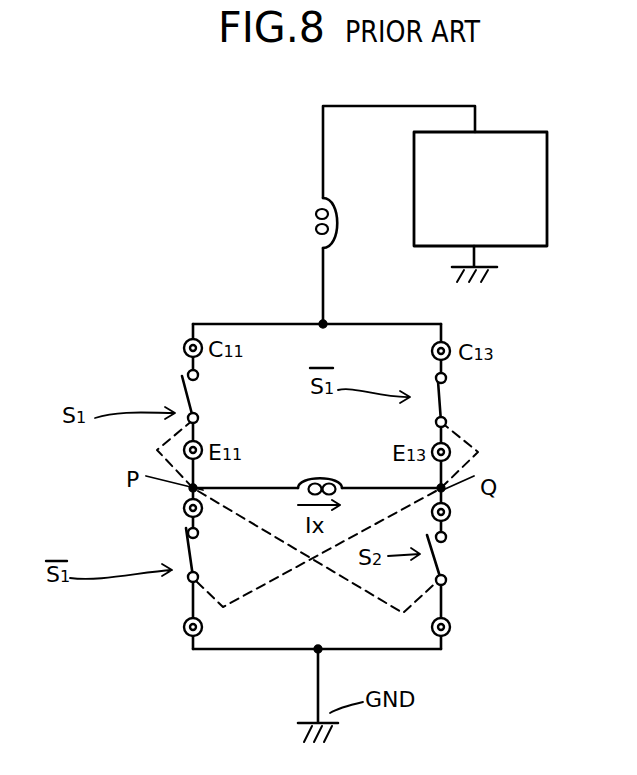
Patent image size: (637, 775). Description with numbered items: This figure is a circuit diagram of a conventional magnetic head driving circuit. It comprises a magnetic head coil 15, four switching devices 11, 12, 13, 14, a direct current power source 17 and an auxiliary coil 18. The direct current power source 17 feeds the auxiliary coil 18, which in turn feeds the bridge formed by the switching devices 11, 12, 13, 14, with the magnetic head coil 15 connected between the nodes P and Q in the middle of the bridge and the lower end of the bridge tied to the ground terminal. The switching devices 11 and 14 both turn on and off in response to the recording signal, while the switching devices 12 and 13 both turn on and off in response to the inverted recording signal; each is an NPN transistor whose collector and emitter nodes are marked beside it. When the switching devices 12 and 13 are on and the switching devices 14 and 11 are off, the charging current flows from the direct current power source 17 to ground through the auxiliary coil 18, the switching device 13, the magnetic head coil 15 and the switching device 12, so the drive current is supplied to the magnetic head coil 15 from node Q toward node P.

The switching device 11 is at (182, 395).
The switching device 12 is at (180, 556).
The switching device 13 is at (445, 401).
The switching device 14 is at (443, 551).
The magnetic head coil 15 is at (322, 478).
The direct current power source 17 is at (548, 156).
The auxiliary coil 18 is at (318, 210).